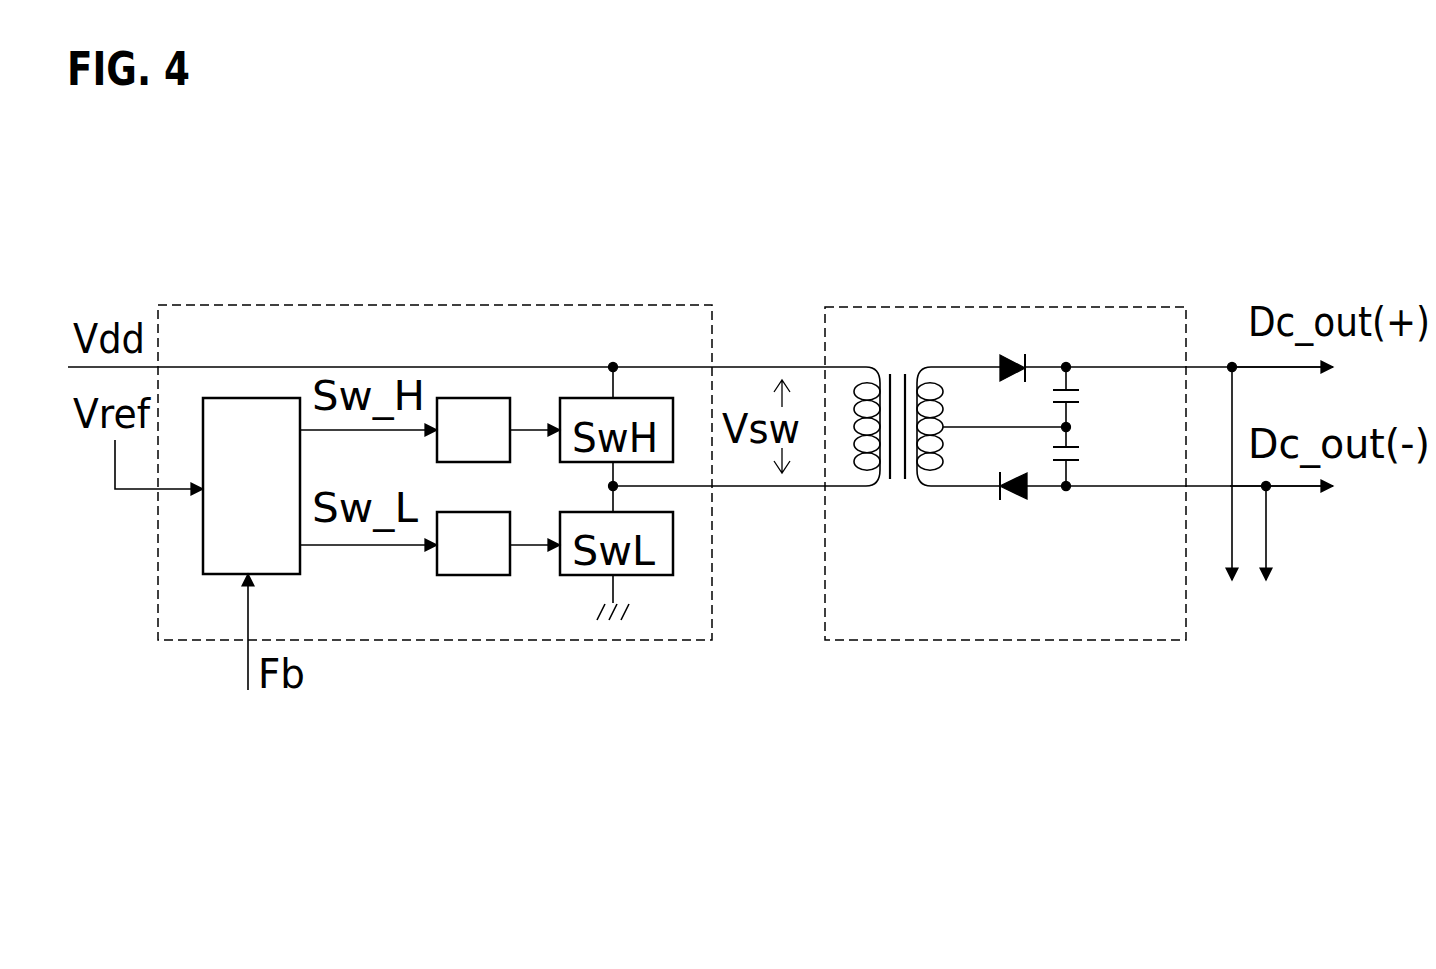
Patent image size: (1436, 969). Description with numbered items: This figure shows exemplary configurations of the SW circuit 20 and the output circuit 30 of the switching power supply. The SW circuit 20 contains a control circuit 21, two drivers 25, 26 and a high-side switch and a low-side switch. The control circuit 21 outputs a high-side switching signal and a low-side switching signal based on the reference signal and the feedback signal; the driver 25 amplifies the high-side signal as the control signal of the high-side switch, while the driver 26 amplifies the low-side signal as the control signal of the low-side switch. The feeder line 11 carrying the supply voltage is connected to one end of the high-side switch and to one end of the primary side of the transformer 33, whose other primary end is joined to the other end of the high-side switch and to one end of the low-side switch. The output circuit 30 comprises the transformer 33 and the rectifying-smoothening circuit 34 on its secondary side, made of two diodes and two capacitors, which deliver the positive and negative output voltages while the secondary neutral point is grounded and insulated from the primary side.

The feeder line 11 is at (808, 365).
The SW circuit 20 is at (388, 303).
The control circuit 21 is at (251, 486).
The driver 25 is at (473, 430).
The driver 26 is at (473, 543).
The output circuit 30 is at (908, 305).
The transformer 33 is at (960, 400).
The rectifying-smoothening circuit 34 is at (1106, 563).